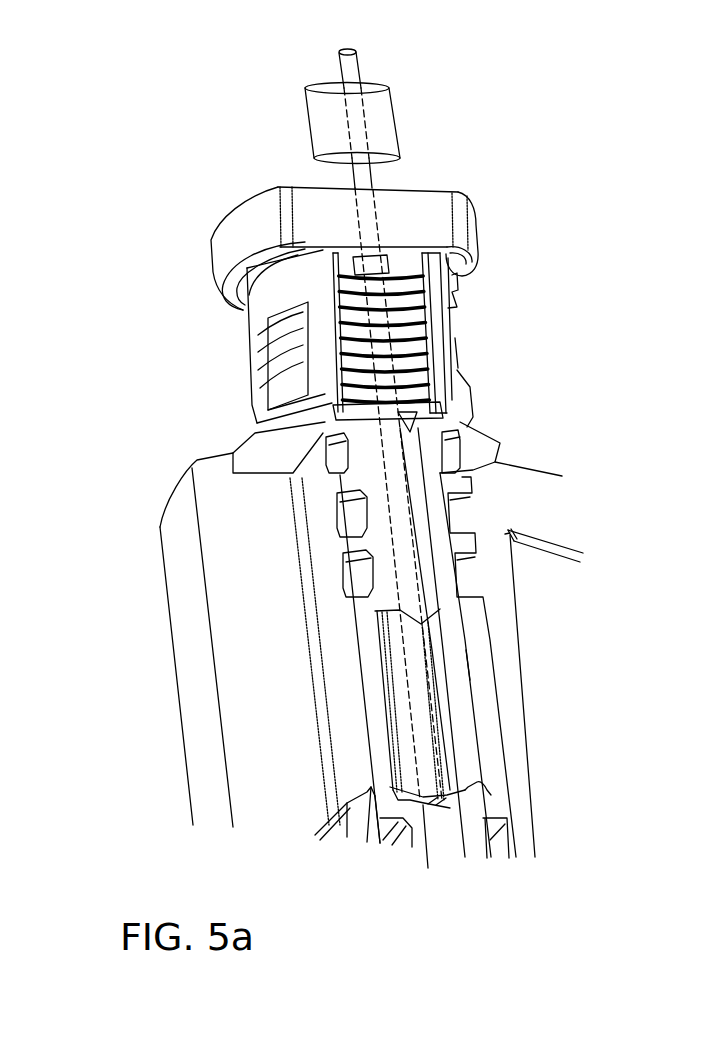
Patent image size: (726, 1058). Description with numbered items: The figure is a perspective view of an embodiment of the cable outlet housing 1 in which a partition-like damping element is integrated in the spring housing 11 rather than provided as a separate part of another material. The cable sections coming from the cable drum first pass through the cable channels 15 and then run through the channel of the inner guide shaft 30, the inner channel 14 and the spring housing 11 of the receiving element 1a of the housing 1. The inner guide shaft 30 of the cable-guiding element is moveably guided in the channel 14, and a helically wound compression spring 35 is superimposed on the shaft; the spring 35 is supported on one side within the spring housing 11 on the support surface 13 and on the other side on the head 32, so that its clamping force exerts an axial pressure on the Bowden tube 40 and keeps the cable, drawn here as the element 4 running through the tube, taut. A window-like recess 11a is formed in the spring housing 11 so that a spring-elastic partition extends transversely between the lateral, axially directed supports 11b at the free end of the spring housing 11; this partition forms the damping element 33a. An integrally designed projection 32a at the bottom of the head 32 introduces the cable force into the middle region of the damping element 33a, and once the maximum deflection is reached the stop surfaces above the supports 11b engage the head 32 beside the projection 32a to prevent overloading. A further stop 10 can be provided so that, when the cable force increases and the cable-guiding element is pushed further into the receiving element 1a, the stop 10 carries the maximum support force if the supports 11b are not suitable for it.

The cable outlet housing 1 is at (175, 683).
The receiving element 1a is at (498, 617).
The pin 4 is at (345, 70).
The Bowden tube 40 is at (330, 112).
The head 32 is at (435, 202).
The projection 32a is at (243, 283).
The elastic spring element 33a is at (462, 305).
The compression spring 35 is at (283, 350).
The spring housing 11 is at (462, 400).
The window-like recess 11a is at (467, 344).
The lateral supports 11b is at (322, 348).
The support surface 13 is at (363, 423).
The inner channel 14 is at (463, 683).
The inner guide shaft 30 is at (448, 767).
The stop 10 is at (481, 796).
The cable channel 15 is at (435, 833).